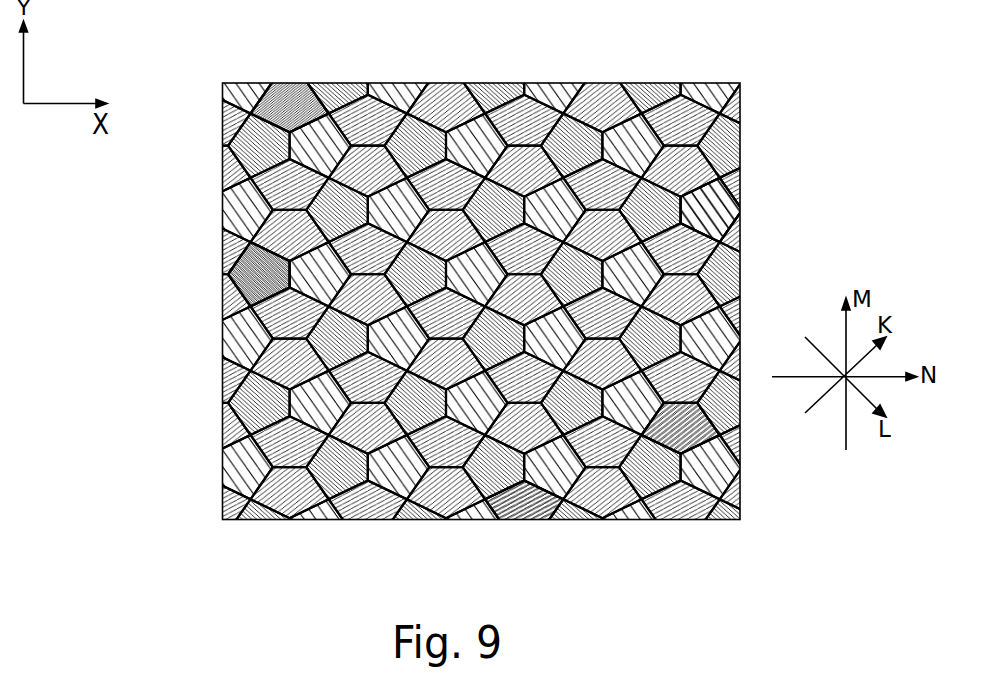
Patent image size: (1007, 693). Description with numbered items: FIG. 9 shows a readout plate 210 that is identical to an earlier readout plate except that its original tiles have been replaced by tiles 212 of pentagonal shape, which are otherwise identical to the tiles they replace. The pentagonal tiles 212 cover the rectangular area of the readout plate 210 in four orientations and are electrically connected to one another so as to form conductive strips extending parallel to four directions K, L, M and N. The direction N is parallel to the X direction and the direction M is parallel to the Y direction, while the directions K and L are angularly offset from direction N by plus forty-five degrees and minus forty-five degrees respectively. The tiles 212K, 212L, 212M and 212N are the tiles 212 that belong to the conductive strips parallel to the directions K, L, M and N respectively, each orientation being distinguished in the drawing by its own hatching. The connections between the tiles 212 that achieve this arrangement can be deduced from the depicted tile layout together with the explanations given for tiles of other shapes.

The readout plate 210 is at (140, 83).
The tiles 212 is at (289, 92).
The tiles belonging to conductive strips parallel to direction K 212K is at (692, 432).
The tiles belonging to conductive strips parallel to direction L 212L is at (715, 213).
The tiles belonging to conductive strips parallel to direction M 212M is at (522, 502).
The tiles belonging to conductive strips parallel to direction N 212N is at (258, 282).